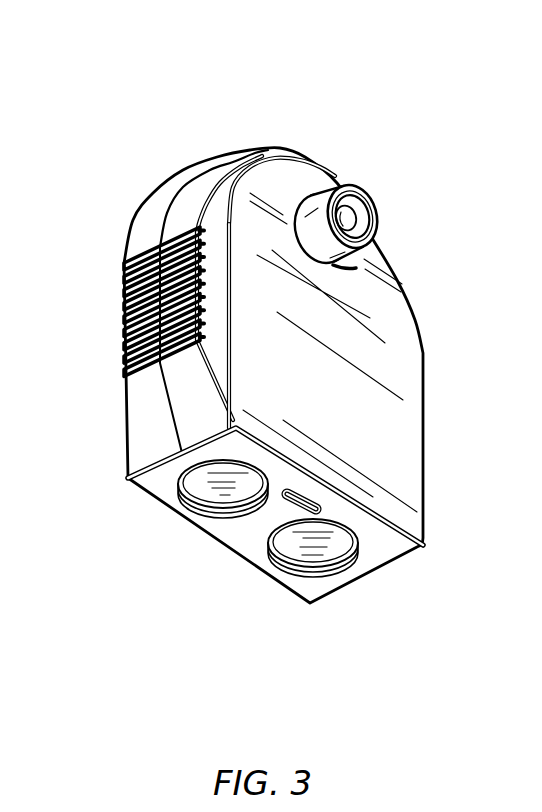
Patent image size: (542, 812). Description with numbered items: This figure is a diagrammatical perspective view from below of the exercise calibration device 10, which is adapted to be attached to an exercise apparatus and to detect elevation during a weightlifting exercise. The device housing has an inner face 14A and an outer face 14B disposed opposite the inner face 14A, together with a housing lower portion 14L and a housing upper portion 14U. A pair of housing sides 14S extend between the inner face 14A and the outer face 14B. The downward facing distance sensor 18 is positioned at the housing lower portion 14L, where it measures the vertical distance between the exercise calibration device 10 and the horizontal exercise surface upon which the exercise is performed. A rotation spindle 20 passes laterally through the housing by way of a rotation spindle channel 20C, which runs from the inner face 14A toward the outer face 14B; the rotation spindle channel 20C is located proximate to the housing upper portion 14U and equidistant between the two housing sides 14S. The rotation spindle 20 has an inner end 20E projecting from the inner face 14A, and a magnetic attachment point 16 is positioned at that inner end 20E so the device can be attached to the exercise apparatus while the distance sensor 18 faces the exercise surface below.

The exercise calibration device 10 is at (260, 323).
The housing upper portion 14U is at (250, 149).
The inner face 14A is at (407, 318).
The outer face 14B is at (125, 342).
The housing sides 14S is at (155, 432).
The housing lower portion 14L is at (385, 547).
The magnetic attachment point 16 is at (354, 214).
The distance sensor 18 is at (287, 550).
The rotation spindle 20 is at (327, 181).
The rotation spindle channel 20C is at (313, 192).
The inner end 20E is at (369, 190).